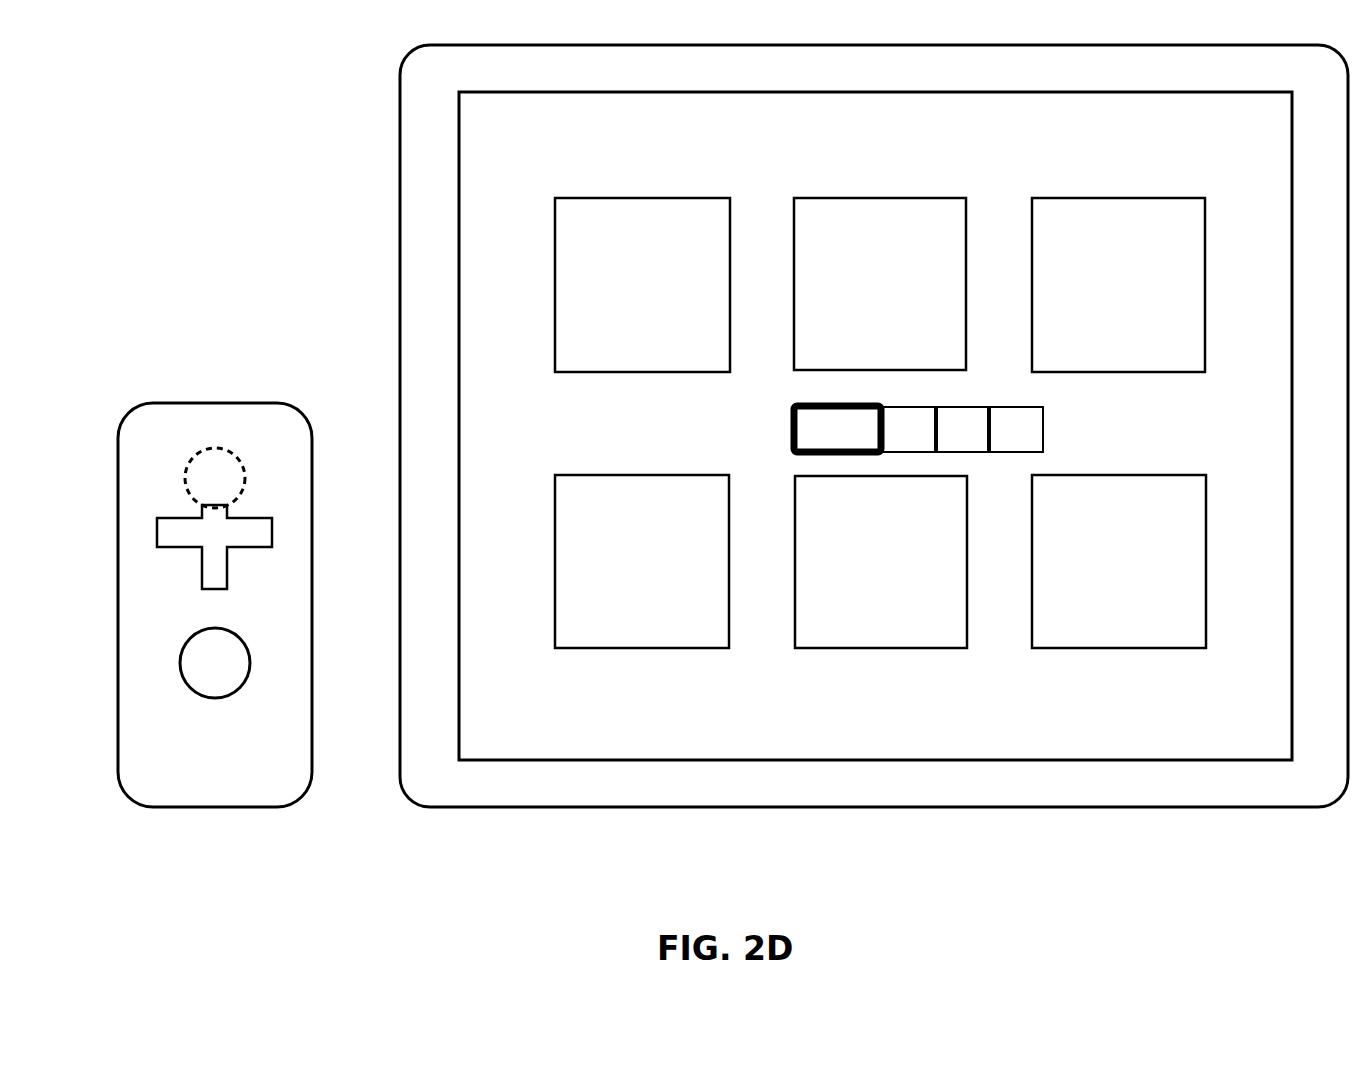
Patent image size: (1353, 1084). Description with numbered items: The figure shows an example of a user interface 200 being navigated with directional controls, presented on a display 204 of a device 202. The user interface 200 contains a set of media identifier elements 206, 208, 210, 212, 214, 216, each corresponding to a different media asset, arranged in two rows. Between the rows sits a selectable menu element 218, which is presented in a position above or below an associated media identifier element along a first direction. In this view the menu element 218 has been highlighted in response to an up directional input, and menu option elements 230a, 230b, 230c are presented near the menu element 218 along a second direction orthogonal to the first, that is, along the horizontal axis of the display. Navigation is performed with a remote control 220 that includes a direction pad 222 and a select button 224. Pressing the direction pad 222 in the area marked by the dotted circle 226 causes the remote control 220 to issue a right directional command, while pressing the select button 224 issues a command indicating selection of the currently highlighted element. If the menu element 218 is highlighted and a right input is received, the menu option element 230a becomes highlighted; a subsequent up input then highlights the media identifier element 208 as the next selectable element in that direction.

The user interface 200 is at (875, 426).
The device 202 is at (392, 166).
The display 204 is at (480, 239).
The media identifier element 206 is at (555, 218).
The media identifier element 208 is at (794, 226).
The media identifier element 210 is at (1032, 224).
The media identifier element 212 is at (555, 508).
The media identifier element 214 is at (795, 508).
The media identifier element 216 is at (1032, 508).
The menu element 218 is at (790, 425).
The remote control 220 is at (118, 450).
The direction pad 222 is at (176, 536).
The select button 224 is at (172, 666).
The dotted circle 226 is at (226, 481).
The menu option element 230a is at (909, 429).
The menu option element 230b is at (962, 429).
The menu option element 230c is at (1016, 429).